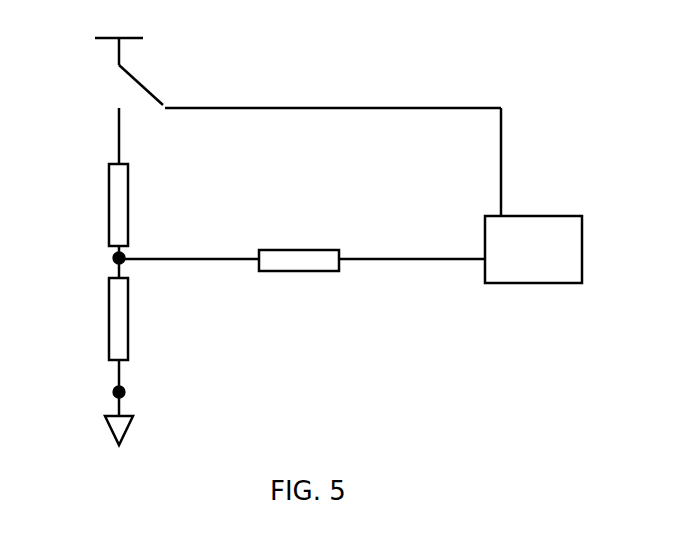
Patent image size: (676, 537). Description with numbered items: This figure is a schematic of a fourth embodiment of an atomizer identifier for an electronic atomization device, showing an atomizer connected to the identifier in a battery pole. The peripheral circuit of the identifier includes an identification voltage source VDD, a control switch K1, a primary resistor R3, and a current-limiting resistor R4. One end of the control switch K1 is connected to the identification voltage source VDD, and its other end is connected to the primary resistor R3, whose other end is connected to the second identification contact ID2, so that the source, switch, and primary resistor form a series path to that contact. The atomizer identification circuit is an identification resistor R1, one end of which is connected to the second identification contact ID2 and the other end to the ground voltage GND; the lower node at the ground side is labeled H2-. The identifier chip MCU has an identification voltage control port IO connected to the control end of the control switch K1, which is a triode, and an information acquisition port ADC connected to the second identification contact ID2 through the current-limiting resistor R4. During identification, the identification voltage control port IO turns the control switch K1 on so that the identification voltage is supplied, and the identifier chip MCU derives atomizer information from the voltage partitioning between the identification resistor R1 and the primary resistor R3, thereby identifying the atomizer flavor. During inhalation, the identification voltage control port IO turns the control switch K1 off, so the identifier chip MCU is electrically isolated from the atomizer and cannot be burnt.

The identification voltage source VDD is at (118, 38).
The control switch K1 is at (275, 114).
The identification voltage control port IO is at (521, 162).
The primary resistor R3 is at (86, 221).
The second identification contact ID2 is at (121, 260).
The current-limiting resistor R4 is at (299, 238).
The information acquisition port ADC is at (412, 281).
The identifier chip MCU is at (533, 249).
The identification resistor R1 is at (86, 347).
The H2- terminal node H2- is at (122, 394).
The ground voltage GND is at (83, 432).